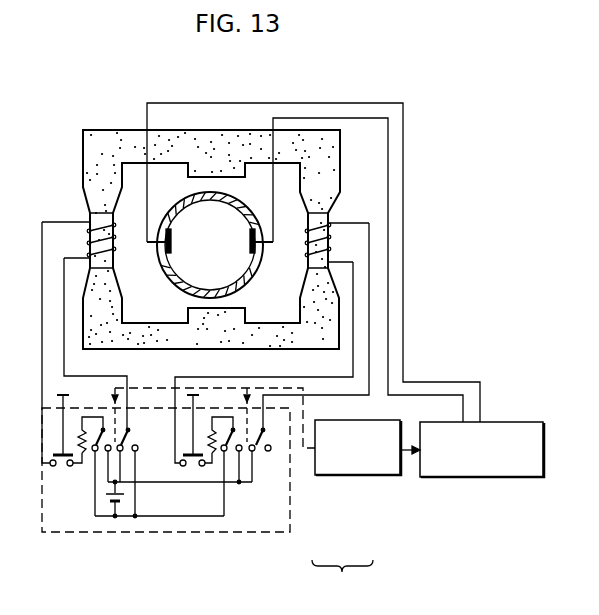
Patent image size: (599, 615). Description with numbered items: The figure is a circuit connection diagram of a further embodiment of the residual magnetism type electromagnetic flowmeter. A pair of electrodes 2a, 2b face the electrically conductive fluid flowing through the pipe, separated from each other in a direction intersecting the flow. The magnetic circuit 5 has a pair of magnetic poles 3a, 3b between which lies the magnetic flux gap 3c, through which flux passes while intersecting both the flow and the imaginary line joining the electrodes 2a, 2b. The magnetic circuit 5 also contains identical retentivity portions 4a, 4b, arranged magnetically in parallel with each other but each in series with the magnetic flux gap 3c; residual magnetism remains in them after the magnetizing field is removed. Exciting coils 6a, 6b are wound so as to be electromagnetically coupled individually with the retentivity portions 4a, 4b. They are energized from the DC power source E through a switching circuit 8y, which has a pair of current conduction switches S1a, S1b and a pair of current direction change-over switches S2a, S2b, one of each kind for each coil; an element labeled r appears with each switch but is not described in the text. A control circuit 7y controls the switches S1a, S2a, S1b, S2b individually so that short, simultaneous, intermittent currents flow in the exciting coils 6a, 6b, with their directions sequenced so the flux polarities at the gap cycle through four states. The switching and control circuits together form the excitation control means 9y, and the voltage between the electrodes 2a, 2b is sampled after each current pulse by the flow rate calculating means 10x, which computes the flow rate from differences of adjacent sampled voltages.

The magnetic circuit 5 is at (362, 185).
The retentivity portion 4a is at (90, 245).
The retentivity portion 4b is at (330, 240).
The exciting coil 6a is at (114, 236).
The exciting coil 6b is at (258, 252).
The magnetic pole 3a is at (225, 179).
The magnetic pole 3b is at (246, 304).
The magnetic flux gap 3c is at (212, 222).
The electrode 2a is at (171, 270).
The electrode 2b is at (248, 245).
The current conduction switch S1a is at (63, 470).
The current direction change-over switch S2a is at (133, 437).
The current conduction switch S1b is at (192, 470).
The current direction change-over switch S2b is at (266, 432).
The DC power source E is at (110, 502).
The resistor r is at (151, 435).
The switching circuit 8y is at (291, 512).
The control circuit 7y is at (335, 476).
The exciting circuit 9y is at (342, 577).
The flow rate calculating means 10x is at (421, 477).